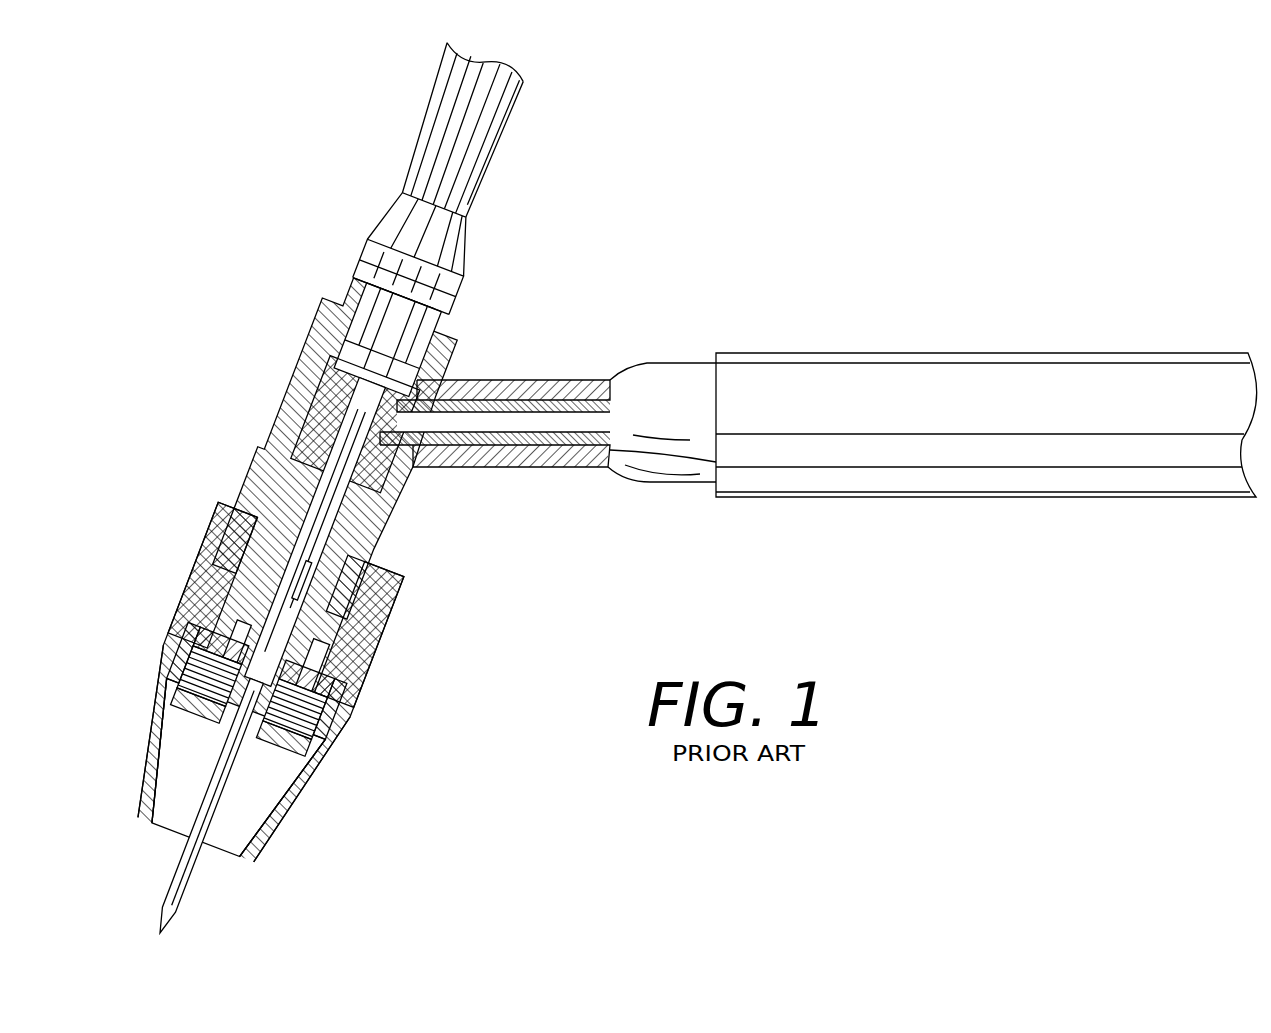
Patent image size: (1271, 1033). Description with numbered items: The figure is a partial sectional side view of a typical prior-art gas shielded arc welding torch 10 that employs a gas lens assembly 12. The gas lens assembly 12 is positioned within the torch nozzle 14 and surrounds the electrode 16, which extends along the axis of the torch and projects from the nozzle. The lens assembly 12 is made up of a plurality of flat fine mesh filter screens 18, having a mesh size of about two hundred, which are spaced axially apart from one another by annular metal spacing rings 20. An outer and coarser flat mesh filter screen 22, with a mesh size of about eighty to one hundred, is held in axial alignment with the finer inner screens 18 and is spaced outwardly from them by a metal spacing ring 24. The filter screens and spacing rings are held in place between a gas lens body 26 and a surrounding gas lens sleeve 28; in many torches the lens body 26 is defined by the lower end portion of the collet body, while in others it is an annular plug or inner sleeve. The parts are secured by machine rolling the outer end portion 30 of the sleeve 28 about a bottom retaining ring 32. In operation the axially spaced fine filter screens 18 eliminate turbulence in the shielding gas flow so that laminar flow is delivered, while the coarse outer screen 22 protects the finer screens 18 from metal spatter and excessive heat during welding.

The gas shielded welding torch 10 is at (540, 300).
The gas lens assembly 12 is at (320, 676).
The torch nozzle 14 is at (287, 813).
The electrode 16 is at (183, 893).
The flat fine mesh filter screens 18 is at (207, 590).
The annular metal spacing rings 20 is at (178, 680).
The outer coarser flat mesh filter screen 22 is at (220, 716).
The metal spacing ring 24 is at (182, 685).
The gas lens body 26 is at (223, 720).
The gas lens sleeve 28 is at (310, 745).
The outer end portion 30 is at (195, 708).
The bottom retaining ring 32 is at (313, 797).